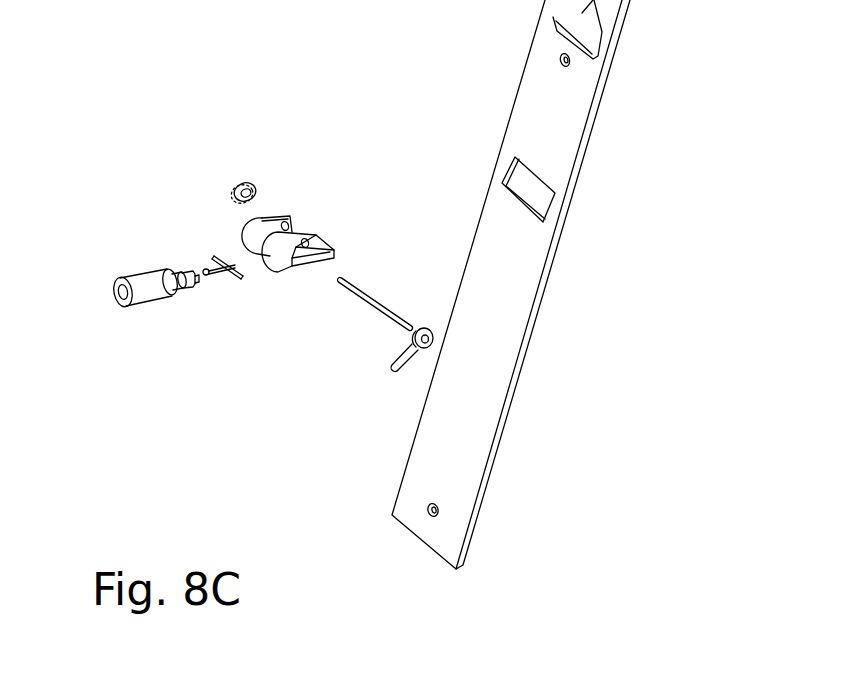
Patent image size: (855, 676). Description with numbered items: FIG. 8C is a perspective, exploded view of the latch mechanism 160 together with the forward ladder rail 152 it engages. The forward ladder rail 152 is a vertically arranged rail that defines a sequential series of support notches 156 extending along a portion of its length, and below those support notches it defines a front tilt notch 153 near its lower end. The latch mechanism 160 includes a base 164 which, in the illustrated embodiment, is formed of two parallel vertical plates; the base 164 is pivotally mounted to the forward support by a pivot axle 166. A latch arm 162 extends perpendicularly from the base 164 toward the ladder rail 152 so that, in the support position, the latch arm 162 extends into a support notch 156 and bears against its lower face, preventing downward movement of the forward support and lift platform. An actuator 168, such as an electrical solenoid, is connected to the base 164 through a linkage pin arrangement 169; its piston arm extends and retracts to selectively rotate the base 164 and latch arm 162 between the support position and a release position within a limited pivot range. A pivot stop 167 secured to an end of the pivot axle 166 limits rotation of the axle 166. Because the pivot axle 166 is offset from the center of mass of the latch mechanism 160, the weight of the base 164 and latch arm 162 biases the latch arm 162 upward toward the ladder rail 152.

The latch mechanism 160 is at (168, 147).
The forward ladder rail 152 is at (532, 261).
The front tilt notch 153 is at (532, 197).
The support notch 156 is at (586, 40).
The latch arm 162 is at (297, 258).
The base 164 is at (280, 268).
The pivot axle 166 is at (365, 297).
The pivot stop 167 is at (402, 362).
The actuator 168 is at (147, 289).
The linkage pin arrangement 169 is at (227, 268).